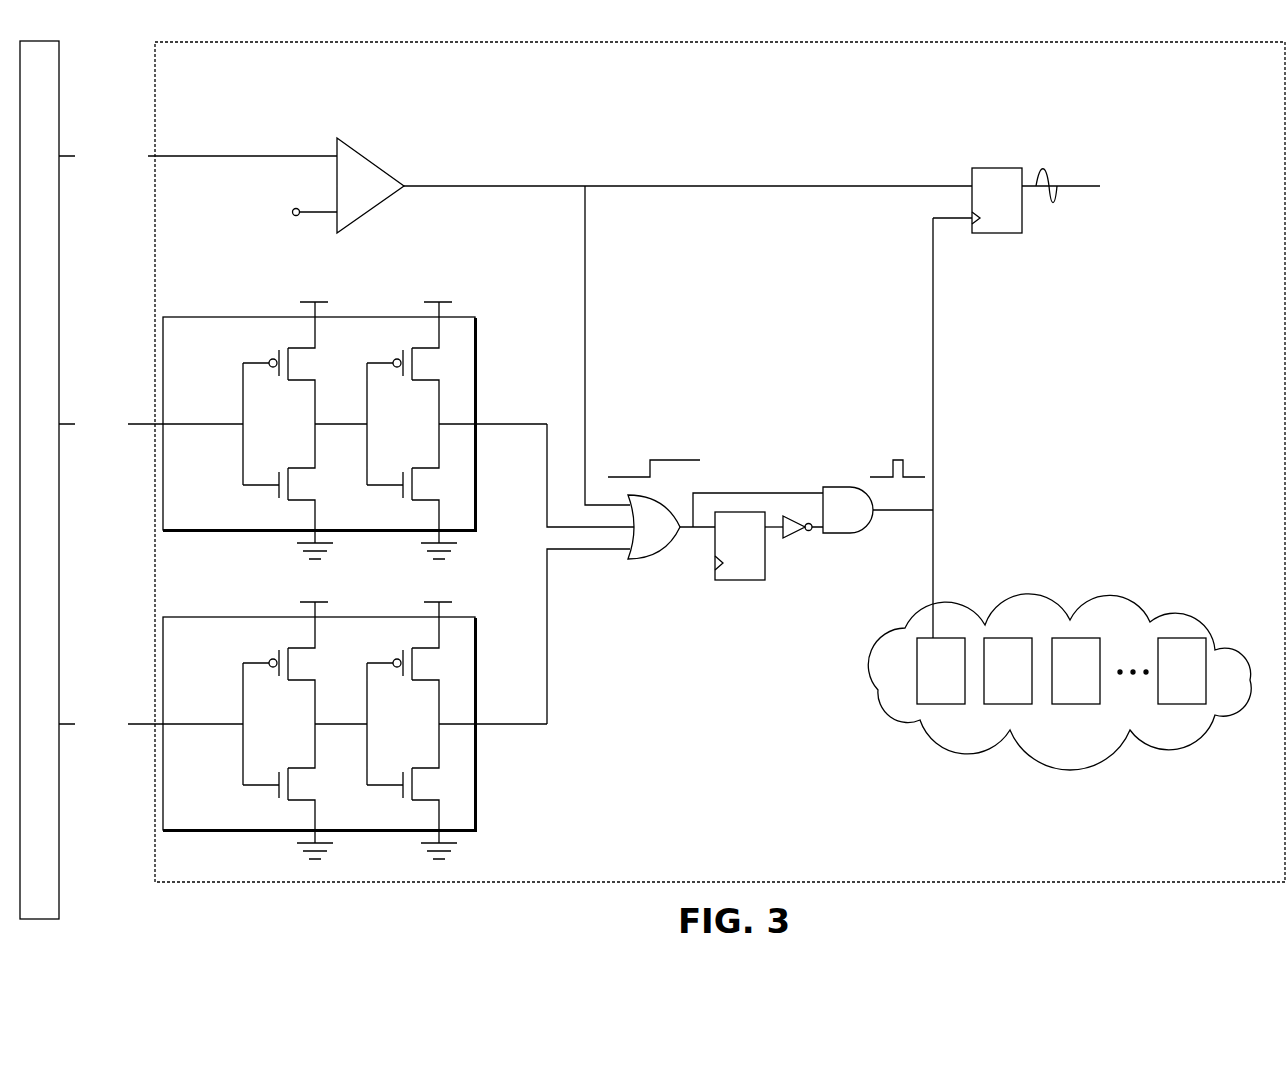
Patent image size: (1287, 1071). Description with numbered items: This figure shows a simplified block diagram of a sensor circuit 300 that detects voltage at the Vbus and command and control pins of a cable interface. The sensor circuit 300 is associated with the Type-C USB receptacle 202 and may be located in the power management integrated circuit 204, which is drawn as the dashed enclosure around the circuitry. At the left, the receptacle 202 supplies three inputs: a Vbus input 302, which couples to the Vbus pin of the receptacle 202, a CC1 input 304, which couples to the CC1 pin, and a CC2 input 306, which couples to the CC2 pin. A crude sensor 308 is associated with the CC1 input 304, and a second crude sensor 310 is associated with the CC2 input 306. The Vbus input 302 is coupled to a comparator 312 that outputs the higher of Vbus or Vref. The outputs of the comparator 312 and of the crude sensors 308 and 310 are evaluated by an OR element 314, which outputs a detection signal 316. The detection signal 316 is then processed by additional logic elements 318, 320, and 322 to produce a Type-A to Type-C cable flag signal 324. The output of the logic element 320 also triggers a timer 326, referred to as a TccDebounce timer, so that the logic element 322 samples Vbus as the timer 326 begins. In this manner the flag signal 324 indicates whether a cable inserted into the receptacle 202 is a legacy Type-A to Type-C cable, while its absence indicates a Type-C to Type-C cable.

The Type-C USB receptacle 202 is at (59, 107).
The power management integrated circuit 204 is at (1115, 38).
The sensor circuit 300 is at (912, 108).
The Vbus input 302 is at (236, 156).
The CC1 input 304 is at (145, 424).
The CC2 input 306 is at (145, 724).
The crude sensor 308 is at (478, 345).
The second crude sensor 310 is at (478, 768).
The comparator 312 is at (370, 160).
The OR element 314 is at (660, 557).
The detection signal 316 is at (678, 460).
The logic element 318 is at (742, 580).
The logic element 320 is at (850, 487).
The logic element 322 is at (1005, 168).
The Type-A to Type-C cable flag signal 324 is at (1047, 178).
The timer 326 is at (1200, 618).